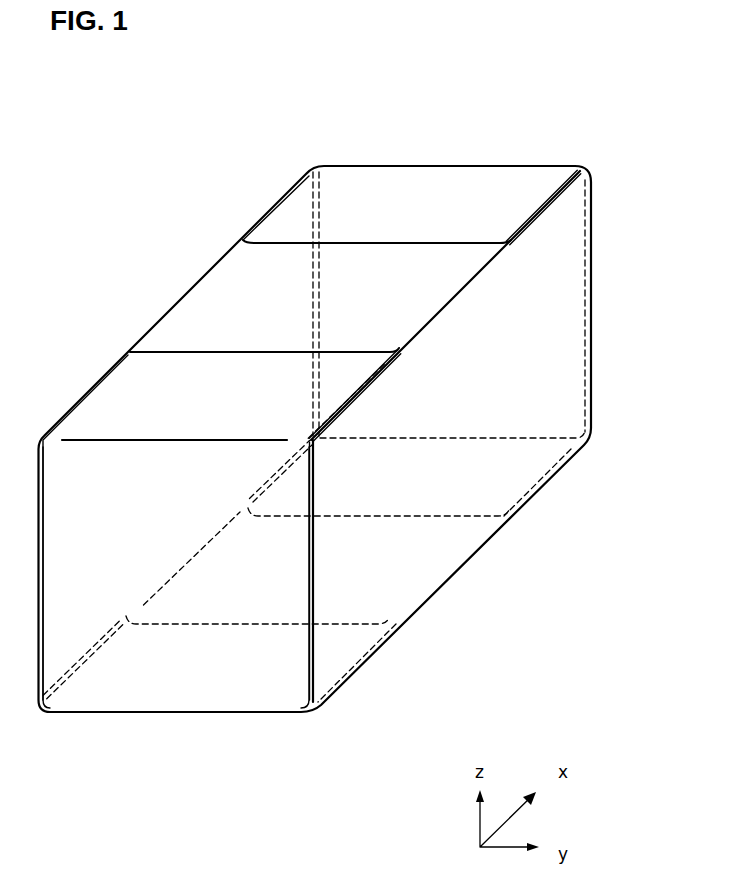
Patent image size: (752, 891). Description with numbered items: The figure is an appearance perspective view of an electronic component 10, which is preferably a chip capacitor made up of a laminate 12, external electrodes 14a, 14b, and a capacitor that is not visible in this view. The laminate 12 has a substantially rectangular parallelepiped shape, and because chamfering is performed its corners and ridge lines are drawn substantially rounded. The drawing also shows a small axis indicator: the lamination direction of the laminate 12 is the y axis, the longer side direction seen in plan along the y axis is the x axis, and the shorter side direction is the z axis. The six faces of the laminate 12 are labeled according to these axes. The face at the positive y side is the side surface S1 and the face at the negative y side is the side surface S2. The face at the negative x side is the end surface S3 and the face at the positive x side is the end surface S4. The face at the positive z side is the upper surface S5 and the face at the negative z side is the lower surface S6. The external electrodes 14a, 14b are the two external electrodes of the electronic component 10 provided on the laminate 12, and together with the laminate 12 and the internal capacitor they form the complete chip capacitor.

The electronic component 10 is at (137, 142).
The laminate 12 is at (477, 150).
The external electrode 14a is at (262, 655).
The external electrode 14b is at (556, 380).
The side surface S1 is at (444, 502).
The side surface S2 is at (165, 370).
The end surface S3 is at (180, 610).
The end surface S4 is at (501, 197).
The upper surface S5 is at (253, 313).
The lower surface S6 is at (396, 568).